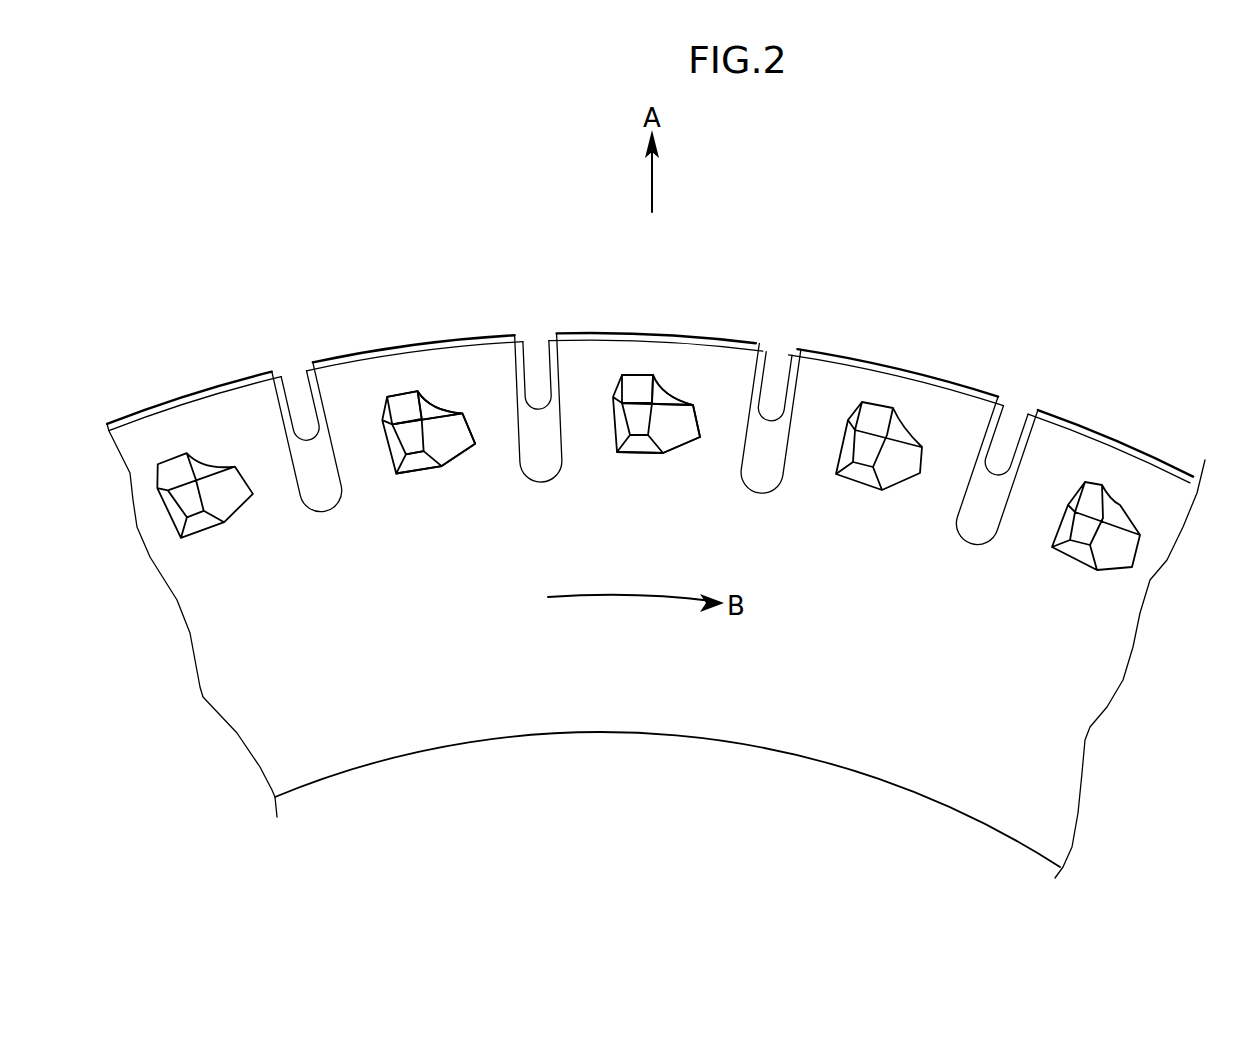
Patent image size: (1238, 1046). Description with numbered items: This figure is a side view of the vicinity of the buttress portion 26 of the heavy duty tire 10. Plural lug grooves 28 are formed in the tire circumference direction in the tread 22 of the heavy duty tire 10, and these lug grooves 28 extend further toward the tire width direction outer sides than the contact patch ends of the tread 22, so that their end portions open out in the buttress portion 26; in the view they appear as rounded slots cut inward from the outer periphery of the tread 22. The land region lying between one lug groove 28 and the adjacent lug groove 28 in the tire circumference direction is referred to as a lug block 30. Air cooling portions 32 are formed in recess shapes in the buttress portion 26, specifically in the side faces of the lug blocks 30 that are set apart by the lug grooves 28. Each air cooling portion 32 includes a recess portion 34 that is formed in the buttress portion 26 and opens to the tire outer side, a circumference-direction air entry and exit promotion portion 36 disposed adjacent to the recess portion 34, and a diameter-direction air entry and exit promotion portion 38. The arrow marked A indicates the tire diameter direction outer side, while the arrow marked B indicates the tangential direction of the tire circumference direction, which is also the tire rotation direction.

The heavy duty tire 10 is at (903, 288).
The tread 22 is at (938, 375).
The buttress portion 26 is at (224, 590).
The lug grooves 28 is at (278, 393).
The lug block 30 is at (700, 333).
The air cooling portions 32 is at (395, 380).
The recess portion 34 is at (428, 474).
The circumference-direction air entry and exit promotion portion 36 is at (471, 412).
The diameter-direction air entry and exit promotion portion 38 is at (410, 380).